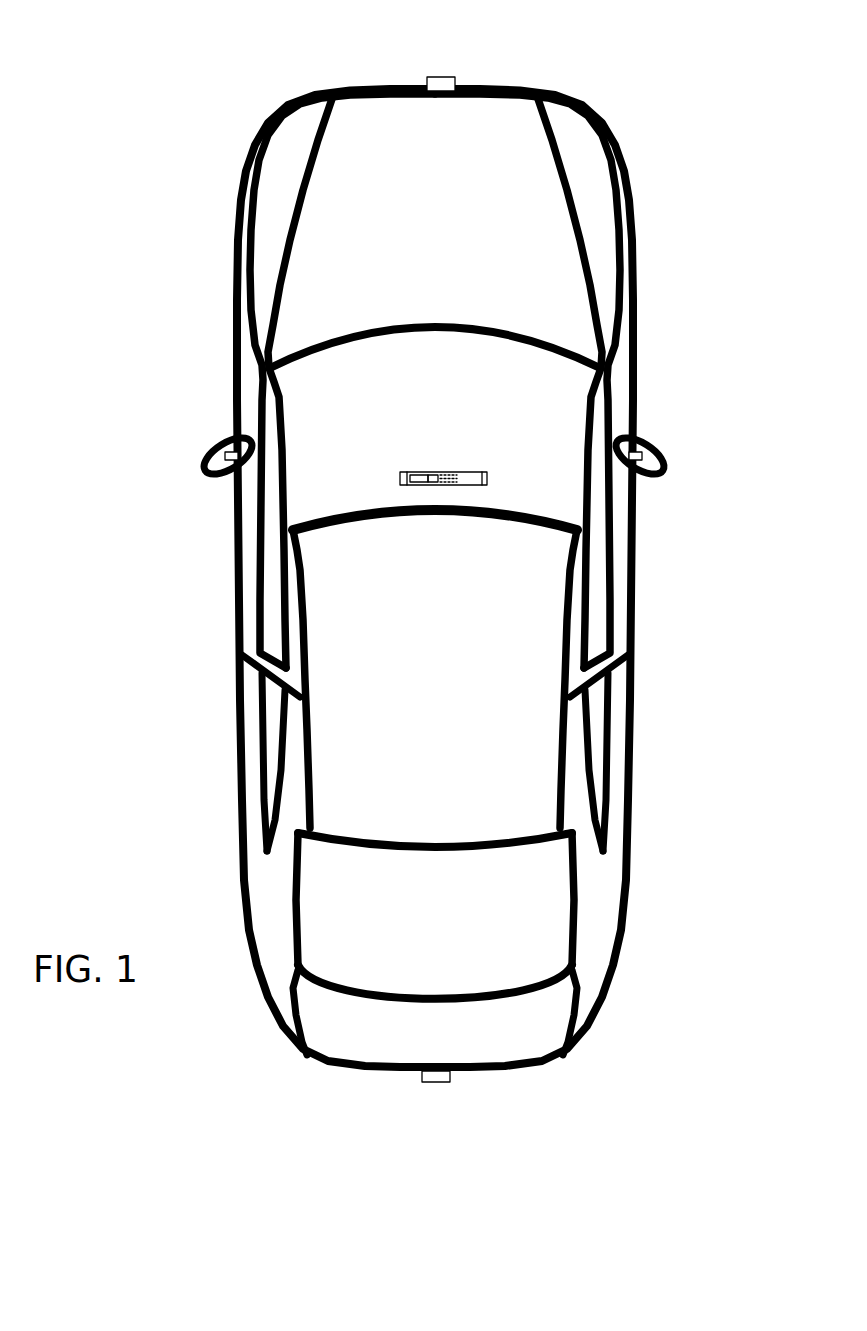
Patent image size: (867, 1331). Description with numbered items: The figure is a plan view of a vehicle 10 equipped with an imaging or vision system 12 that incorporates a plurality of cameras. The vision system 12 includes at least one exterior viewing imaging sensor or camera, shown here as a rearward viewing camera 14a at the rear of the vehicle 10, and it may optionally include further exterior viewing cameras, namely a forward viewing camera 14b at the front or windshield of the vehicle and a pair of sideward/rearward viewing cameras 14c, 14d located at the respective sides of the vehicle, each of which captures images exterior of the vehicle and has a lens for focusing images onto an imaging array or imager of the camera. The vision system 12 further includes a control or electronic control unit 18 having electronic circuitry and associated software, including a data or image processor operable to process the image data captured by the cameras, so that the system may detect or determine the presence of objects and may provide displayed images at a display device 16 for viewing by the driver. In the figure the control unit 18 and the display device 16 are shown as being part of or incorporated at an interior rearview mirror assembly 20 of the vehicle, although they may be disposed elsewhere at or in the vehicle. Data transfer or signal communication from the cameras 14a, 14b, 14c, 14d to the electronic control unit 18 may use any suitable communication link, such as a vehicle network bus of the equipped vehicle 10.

The vehicle 10 is at (183, 169).
The vision system 12 is at (385, 1102).
The rearward viewing camera 14a is at (437, 1081).
The forward viewing camera 14b is at (443, 77).
The sideward/rearward viewing camera 14c is at (221, 452).
The sideward/rearward viewing camera 14d is at (644, 452).
The display device 16 is at (420, 477).
The electronic control unit 18 is at (438, 470).
The interior rearview mirror assembly 20 is at (487, 473).